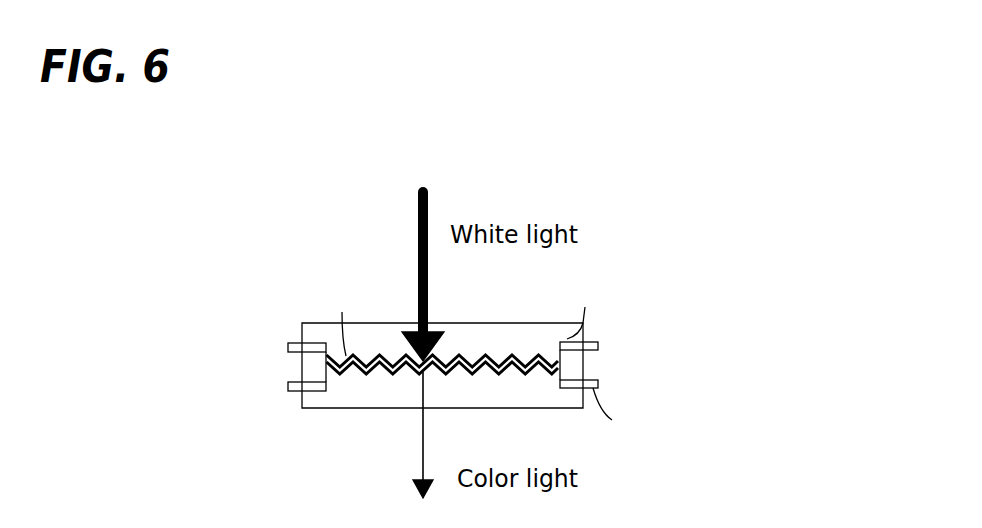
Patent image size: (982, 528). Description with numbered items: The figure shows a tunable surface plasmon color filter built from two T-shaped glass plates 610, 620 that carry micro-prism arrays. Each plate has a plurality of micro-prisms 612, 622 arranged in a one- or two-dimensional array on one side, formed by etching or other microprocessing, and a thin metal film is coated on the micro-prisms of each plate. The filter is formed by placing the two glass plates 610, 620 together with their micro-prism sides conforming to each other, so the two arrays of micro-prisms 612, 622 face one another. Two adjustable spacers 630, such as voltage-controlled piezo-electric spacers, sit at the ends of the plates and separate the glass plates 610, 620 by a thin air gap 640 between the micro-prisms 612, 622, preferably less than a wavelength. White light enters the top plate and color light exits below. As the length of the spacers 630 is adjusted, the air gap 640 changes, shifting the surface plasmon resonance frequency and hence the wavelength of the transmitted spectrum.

The glass plate 610 is at (470, 322).
The micro-prisms 612 is at (480, 355).
The glass plate 620 is at (493, 408).
The micro-prisms 622 is at (487, 373).
The adjustable spacers 630 is at (290, 365).
The air gap 640 is at (388, 377).